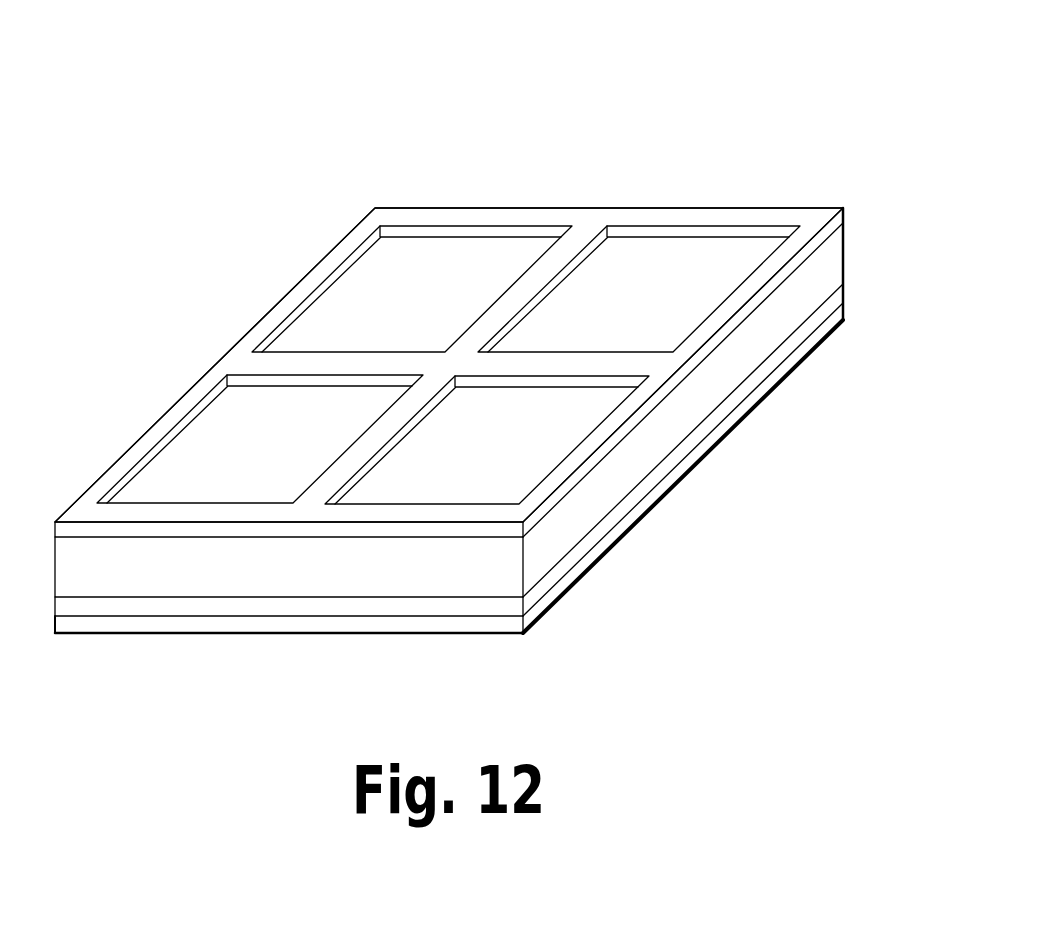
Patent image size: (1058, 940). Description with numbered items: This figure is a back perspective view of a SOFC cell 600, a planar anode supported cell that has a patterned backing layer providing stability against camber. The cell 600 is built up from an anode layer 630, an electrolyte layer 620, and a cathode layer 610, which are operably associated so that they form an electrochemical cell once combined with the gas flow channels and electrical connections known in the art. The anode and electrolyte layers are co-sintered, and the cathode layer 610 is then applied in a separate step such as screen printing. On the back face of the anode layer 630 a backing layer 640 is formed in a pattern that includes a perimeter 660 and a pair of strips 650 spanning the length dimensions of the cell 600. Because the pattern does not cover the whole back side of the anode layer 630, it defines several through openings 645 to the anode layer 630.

The SOFC cell 600 is at (496, 336).
The cathode layer 610 is at (847, 313).
The electrolyte layer 620 is at (847, 290).
The anode layer 630 is at (847, 253).
The backing layer 640 is at (847, 216).
The through openings 645 is at (678, 233).
The strips 650 is at (567, 243).
The perimeter 660 is at (429, 215).